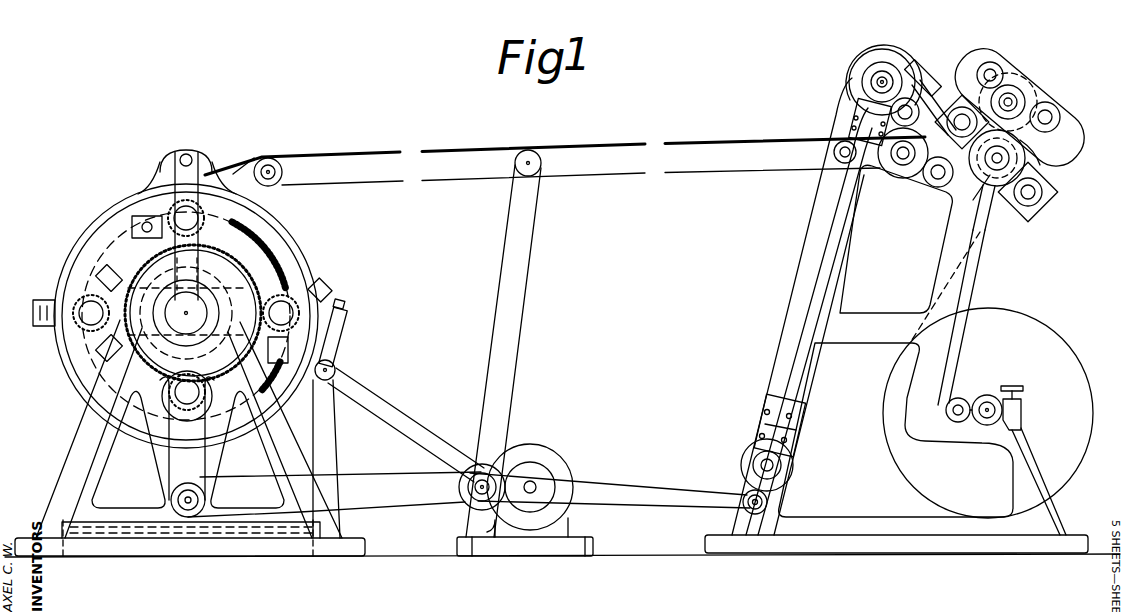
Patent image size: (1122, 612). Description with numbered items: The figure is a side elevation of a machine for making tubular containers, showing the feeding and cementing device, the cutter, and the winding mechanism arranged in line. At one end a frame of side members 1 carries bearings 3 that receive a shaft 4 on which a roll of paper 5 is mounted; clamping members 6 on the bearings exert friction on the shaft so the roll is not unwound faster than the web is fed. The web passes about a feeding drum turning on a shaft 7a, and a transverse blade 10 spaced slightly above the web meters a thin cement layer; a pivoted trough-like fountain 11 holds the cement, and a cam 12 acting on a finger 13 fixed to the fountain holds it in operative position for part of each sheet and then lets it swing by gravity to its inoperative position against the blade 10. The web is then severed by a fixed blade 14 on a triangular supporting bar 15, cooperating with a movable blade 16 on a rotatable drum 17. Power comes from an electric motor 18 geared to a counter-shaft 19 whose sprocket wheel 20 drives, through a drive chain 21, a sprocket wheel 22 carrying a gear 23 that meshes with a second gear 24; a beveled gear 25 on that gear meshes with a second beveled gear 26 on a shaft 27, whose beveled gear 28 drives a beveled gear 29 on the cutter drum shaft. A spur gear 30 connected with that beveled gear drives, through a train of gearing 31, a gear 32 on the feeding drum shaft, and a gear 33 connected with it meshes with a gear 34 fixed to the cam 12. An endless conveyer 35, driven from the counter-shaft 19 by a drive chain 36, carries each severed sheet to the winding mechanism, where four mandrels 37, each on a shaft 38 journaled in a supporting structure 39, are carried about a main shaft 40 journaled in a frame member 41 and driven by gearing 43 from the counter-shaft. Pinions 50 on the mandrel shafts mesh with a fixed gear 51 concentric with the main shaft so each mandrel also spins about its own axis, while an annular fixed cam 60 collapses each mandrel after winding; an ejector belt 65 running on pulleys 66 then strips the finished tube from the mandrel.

The side members 1 is at (962, 280).
The bearings 3 is at (1022, 420).
The shaft 4 is at (992, 404).
The roll of paper 5 is at (905, 448).
The clamping members 6 is at (1012, 410).
The shaft of the drum 7a is at (1040, 178).
The blade 10 is at (1012, 92).
The fountain 11 is at (1040, 146).
The cam 12 is at (1032, 100).
The finger 13 is at (1062, 118).
The fixed blade 14 is at (898, 165).
The triangular supporting bar 15 is at (922, 165).
The movable blade 16 is at (932, 88).
The drum 17 is at (848, 82).
The electric motor 18 is at (562, 472).
The counter-shaft 19 is at (470, 498).
The sprocket wheel 20 is at (479, 478).
The drive chain 21 is at (620, 478).
The sprocket wheel 22 is at (742, 506).
The gear 23 is at (768, 501).
The second gear 24 is at (794, 465).
The beveled gear 25 is at (752, 446).
The second beveled gear 26 is at (792, 441).
The shaft 27 is at (796, 372).
The beveled gear 28 is at (858, 106).
The beveled gear 29 is at (870, 78).
The spur gear 30 is at (890, 60).
The train of gearing 31 is at (955, 140).
The gear 32 is at (978, 190).
The gear 33 is at (1026, 154).
The gear 34 is at (1000, 76).
The endless conveyer 35 is at (720, 152).
The drive chain 36 is at (532, 262).
The mandrels 37 is at (96, 280).
The shaft 38 is at (204, 218).
The supporting structure 39 is at (215, 258).
The main shaft 40 is at (190, 316).
The frame member 41 is at (104, 395).
The gearing 43 is at (190, 518).
The pinions 50 is at (172, 210).
The fixed gear 51 is at (242, 276).
The annular fixed cam 60 is at (106, 490).
The belt 65 is at (348, 336).
The pulleys 66 is at (342, 312).